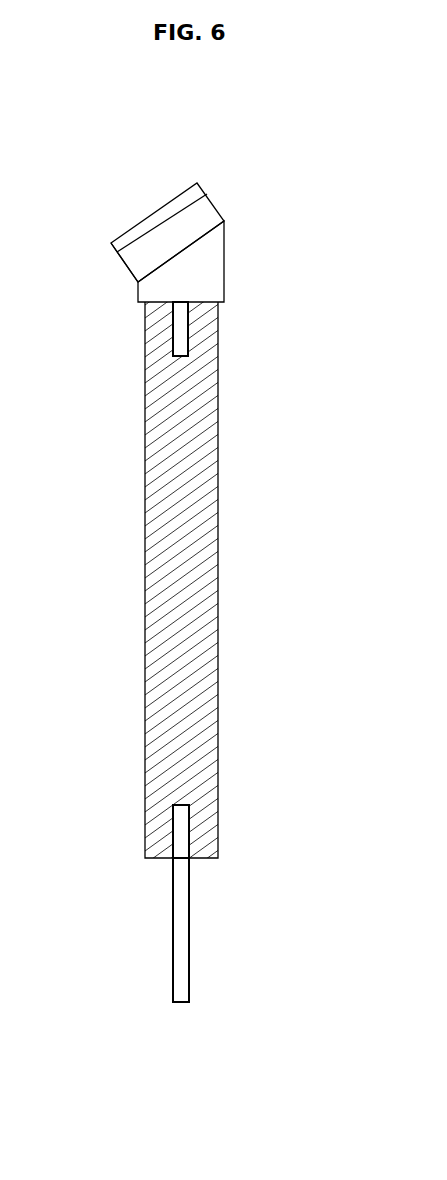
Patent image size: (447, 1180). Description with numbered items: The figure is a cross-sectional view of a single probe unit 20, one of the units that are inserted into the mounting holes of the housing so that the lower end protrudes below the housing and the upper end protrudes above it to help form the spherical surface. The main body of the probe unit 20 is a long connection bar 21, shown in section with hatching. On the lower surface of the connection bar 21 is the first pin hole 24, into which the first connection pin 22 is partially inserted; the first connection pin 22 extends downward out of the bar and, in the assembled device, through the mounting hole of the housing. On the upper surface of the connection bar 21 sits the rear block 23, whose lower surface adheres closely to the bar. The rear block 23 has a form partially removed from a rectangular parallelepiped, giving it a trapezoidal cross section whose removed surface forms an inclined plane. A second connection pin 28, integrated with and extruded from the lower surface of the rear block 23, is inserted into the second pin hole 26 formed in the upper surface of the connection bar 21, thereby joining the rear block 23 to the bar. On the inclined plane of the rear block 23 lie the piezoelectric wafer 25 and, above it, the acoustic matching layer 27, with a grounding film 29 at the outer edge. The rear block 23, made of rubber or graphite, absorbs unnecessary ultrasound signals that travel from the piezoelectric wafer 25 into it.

The probe unit 20 is at (147, 162).
The connection bar 21 is at (197, 567).
The first connection pin 22 is at (182, 940).
The rear block 23 is at (208, 265).
The first pin hole 24 is at (172, 825).
The piezoelectric wafer 25 is at (205, 218).
The second pin hole 26 is at (173, 340).
The acoustic matching layer 27 is at (202, 197).
The second connection pin 28 is at (182, 326).
The grounding film 29 is at (127, 230).